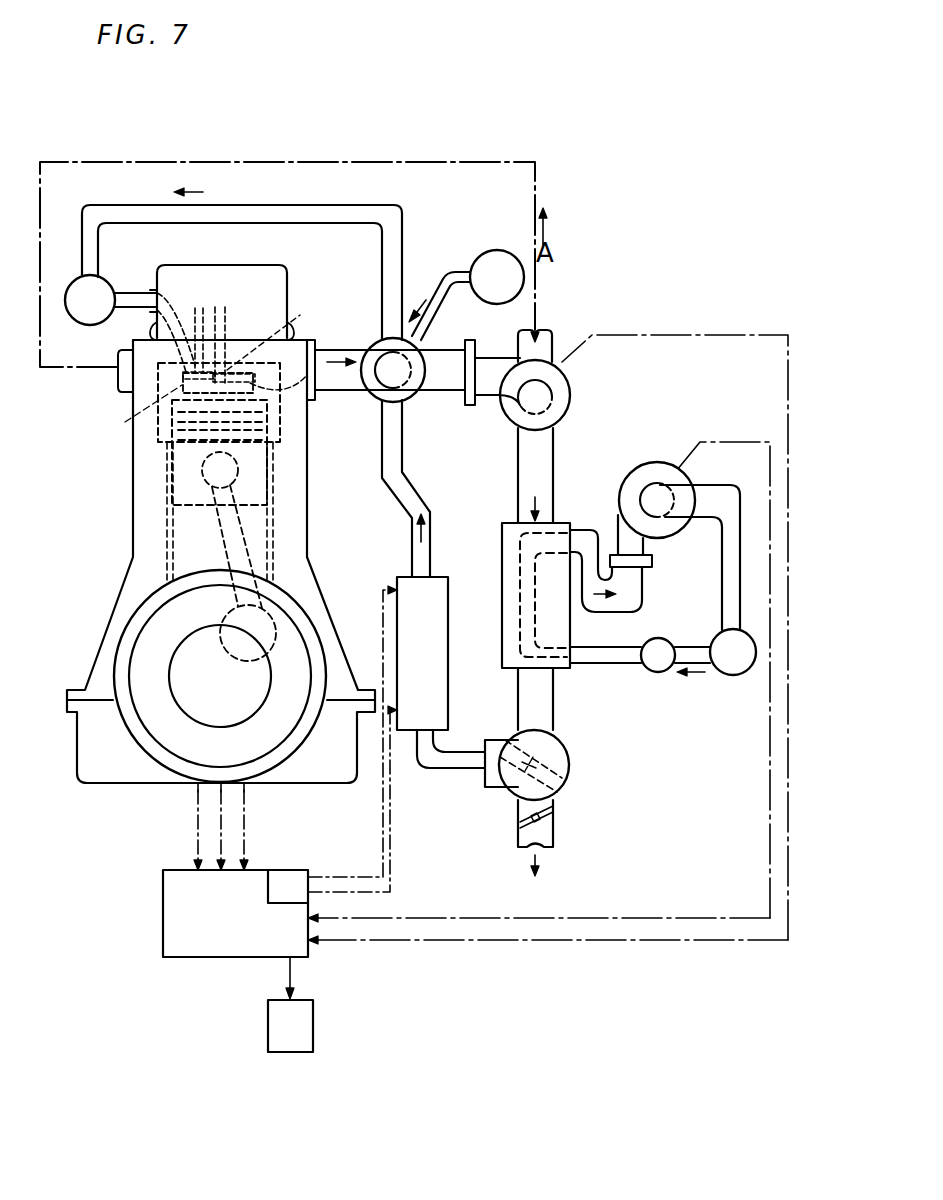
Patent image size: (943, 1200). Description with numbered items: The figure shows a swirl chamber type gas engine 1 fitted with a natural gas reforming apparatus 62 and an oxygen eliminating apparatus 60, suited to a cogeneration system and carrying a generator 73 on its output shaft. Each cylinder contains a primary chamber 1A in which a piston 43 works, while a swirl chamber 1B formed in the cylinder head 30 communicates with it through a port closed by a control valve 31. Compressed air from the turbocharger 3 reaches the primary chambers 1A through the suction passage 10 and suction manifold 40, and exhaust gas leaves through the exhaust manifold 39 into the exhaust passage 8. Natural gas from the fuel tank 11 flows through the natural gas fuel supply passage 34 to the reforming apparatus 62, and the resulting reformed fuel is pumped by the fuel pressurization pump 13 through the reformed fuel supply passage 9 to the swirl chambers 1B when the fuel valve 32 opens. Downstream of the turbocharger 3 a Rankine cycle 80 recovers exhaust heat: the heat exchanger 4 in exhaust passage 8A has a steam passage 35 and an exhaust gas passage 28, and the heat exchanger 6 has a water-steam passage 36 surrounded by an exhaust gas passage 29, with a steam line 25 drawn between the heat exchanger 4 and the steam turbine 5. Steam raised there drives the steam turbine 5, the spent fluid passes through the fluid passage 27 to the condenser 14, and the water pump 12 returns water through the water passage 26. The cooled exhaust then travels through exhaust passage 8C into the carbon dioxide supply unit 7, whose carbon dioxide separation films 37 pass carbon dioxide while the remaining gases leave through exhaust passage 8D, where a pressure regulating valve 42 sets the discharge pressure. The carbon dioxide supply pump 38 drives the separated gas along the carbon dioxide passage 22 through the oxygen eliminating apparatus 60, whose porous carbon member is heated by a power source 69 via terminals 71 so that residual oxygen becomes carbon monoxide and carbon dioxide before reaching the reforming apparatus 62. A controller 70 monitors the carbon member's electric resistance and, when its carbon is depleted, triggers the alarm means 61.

The gas engine 1 is at (118, 460).
The primary chamber 1A is at (262, 412).
The swirl chamber 1B is at (270, 352).
The turbocharger 3 is at (568, 394).
The heat exchanger 4 is at (512, 530).
The steam turbine 5 is at (651, 470).
The heat exchanger 6 is at (502, 648).
The CO2 supply unit 7 is at (503, 735).
The exhaust passage 8 is at (342, 378).
The exhaust passage 8A is at (540, 462).
The exhaust passage 8C is at (540, 716).
The exhaust passage 8D is at (540, 830).
The reformed fuel supply passage 9 is at (312, 215).
The suction passage 10 is at (388, 162).
The fuel tank 11 is at (495, 265).
The water pump 12 is at (660, 645).
The fuel pressurization pump 13 is at (88, 312).
The condenser 14 is at (733, 675).
The CO2 passage 22 is at (398, 453).
The steam pipe 25 is at (578, 540).
The water passage 26 is at (625, 660).
The fluid passage 27 is at (725, 571).
The exhaust gas passage 28 is at (520, 580).
The exhaust gas passage 29 is at (552, 636).
The cylinder head 30 is at (139, 417).
The control valve 31 is at (281, 327).
The fuel valve 32 is at (208, 330).
The natural gas fuel supply passage 34 is at (447, 285).
The steam passage 35 is at (522, 566).
The water-steam passage 36 is at (556, 660).
The CO2 separation film 37 is at (527, 790).
The CO2 supply pump 38 is at (493, 782).
The exhaust manifold 39 is at (310, 380).
The suction manifold 40 is at (120, 380).
The pressure regulating valve 42 is at (555, 813).
The piston 43 is at (190, 485).
The oxygen eliminating apparatus 60 is at (437, 656).
The alarm means 61 is at (310, 1028).
The natural gas reforming apparatus 62 is at (404, 397).
The power source 69 is at (290, 878).
The controller 70 is at (245, 942).
The terminals 71 is at (388, 588).
The generator 73 is at (145, 665).
The Rankine cycle 80 is at (652, 690).